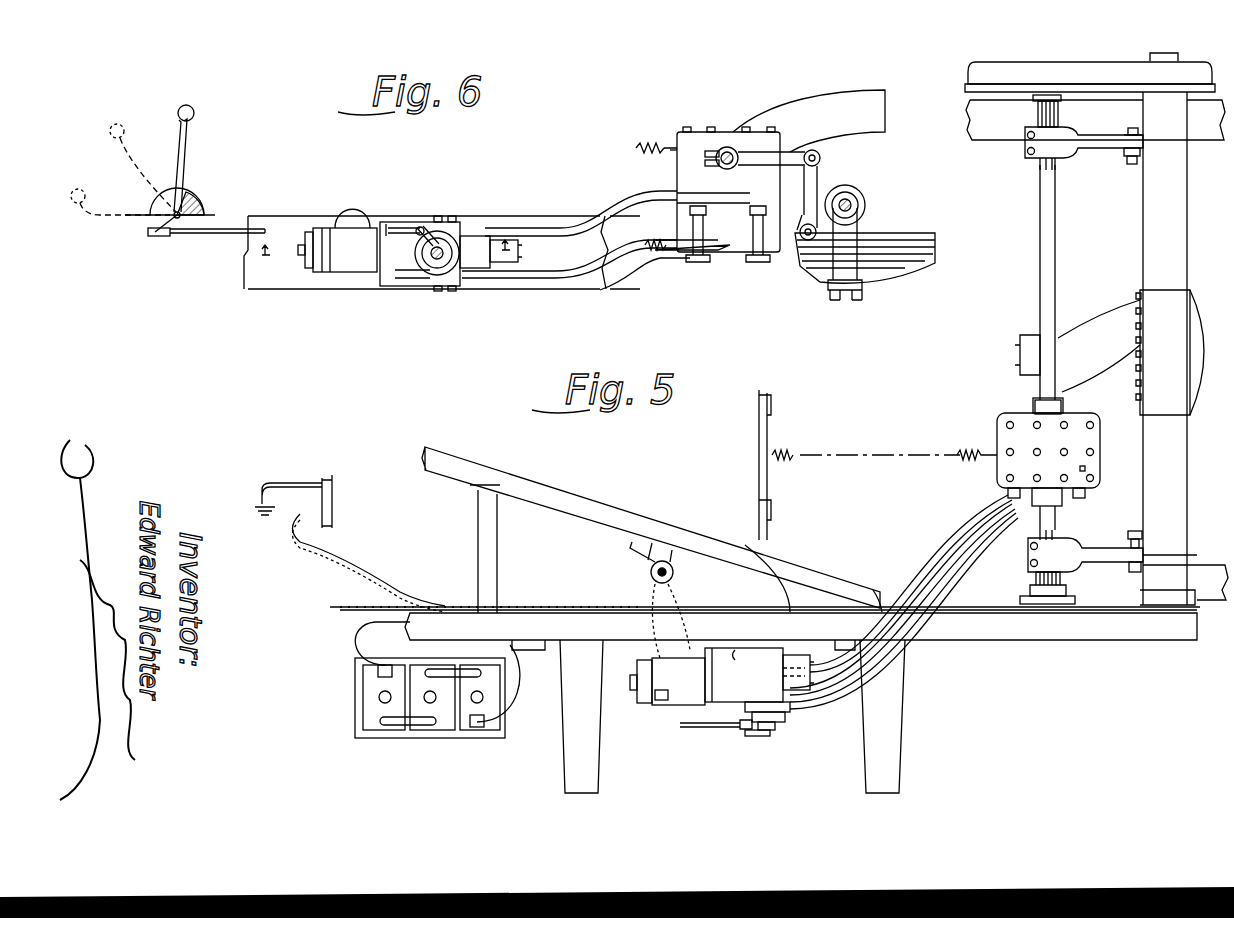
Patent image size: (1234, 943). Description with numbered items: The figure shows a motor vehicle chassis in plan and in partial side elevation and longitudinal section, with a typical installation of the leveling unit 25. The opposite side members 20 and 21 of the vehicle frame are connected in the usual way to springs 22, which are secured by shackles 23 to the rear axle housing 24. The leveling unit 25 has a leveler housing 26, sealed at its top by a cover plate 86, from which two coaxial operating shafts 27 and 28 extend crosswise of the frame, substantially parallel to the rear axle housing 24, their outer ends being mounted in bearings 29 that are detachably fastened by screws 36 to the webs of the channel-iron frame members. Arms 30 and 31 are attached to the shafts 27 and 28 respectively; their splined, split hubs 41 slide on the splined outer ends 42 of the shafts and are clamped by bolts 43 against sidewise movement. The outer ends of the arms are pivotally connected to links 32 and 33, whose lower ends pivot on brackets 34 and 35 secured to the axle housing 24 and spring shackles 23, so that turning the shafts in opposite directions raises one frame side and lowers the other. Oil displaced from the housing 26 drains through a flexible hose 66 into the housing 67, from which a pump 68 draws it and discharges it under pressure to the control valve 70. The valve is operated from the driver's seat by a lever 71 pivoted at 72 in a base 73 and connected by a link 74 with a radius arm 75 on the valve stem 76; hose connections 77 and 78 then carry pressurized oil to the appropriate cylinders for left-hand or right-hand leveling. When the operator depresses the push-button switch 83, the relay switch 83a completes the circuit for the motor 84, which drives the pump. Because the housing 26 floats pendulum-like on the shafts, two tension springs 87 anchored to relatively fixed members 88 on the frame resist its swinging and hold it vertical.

In FIG. 6, the side member of the vehicle frame 20 is at (858, 90).
In FIG. 5, the side member of the vehicle frame 20 is at (1020, 66).
In FIG. 6, the side member of the vehicle frame 21 is at (578, 282).
In FIG. 5, the side member of the vehicle frame 21 is at (996, 628).
In FIG. 6, the springs 22 is at (932, 238).
In FIG. 5, the springs 22 is at (1208, 135).
In FIG. 6, the shackles 23 is at (848, 292).
In FIG. 5, the shackles 23 is at (1168, 140).
In FIG. 6, the rear axle housing 24 is at (868, 195).
In FIG. 5, the rear axle housing 24 is at (1156, 226).
In FIG. 6, the leveling unit 25 is at (730, 130).
In FIG. 5, the leveling unit 25 is at (1018, 410).
In FIG. 6, the leveler housing 26 is at (780, 254).
In FIG. 5, the leveler housing 26 is at (1100, 462).
In FIG. 5, the operating shaft 27 is at (1052, 292).
In FIG. 6, the operating shaft 28 is at (735, 166).
In FIG. 5, the operating shaft 28 is at (1058, 520).
In FIG. 5, the bearings 29 is at (1034, 100).
In FIG. 5, the arm 30 is at (1090, 148).
In FIG. 6, the arm 31 is at (782, 160).
In FIG. 5, the arm 31 is at (1083, 552).
In FIG. 6, the link 32 is at (806, 200).
In FIG. 5, the link 32 is at (1128, 164).
In FIG. 6, the link 33 is at (821, 163).
In FIG. 5, the link 33 is at (1130, 534).
In FIG. 5, the bracket 34 is at (1133, 128).
In FIG. 5, the bracket 35 is at (1130, 570).
In FIG. 5, the screws 36 is at (1060, 108).
In FIG. 5, the hubs 41 is at (1027, 152).
In FIG. 5, the splined outer ends 42 is at (1040, 165).
In FIG. 5, the bolts 43 is at (1026, 136).
In FIG. 6, the flexible hose 66 is at (636, 272).
In FIG. 5, the flexible hose 66 is at (965, 513).
In FIG. 6, the housing 67 is at (425, 222).
In FIG. 5, the housing 67 is at (744, 675).
In FIG. 6, the pump 68 is at (505, 240).
In FIG. 5, the pump 68 is at (800, 662).
In FIG. 6, the control valve 70 is at (428, 272).
In FIG. 5, the control valve 70 is at (788, 716).
In FIG. 6, the lever 71 is at (180, 168).
In FIG. 6, the pivot 72 is at (190, 205).
In FIG. 6, the base 73 is at (205, 215).
In FIG. 6, the link 74 is at (218, 234).
In FIG. 5, the link 74 is at (692, 728).
In FIG. 6, the radius arm 75 is at (420, 236).
In FIG. 5, the radius arm 75 is at (755, 736).
In FIG. 6, the stem 76 is at (470, 236).
In FIG. 6, the flexible hose connection 77 is at (560, 236).
In FIG. 5, the flexible hose connection 77 is at (915, 570).
In FIG. 6, the flexible hose connection 78 is at (578, 205).
In FIG. 5, the flexible hose connection 78 is at (930, 588).
In FIG. 5, the push-button switch 83 is at (338, 498).
In FIG. 5, the relay switch 83a is at (668, 560).
In FIG. 6, the motor 84 is at (352, 280).
In FIG. 5, the motor 84 is at (658, 680).
In FIG. 6, the cover plate 86 is at (680, 145).
In FIG. 5, the cover plate 86 is at (1088, 438).
In FIG. 6, the tension springs 87 is at (640, 152).
In FIG. 5, the tension springs 87 is at (968, 452).
In FIG. 5, the relatively fixed members 88 is at (771, 420).